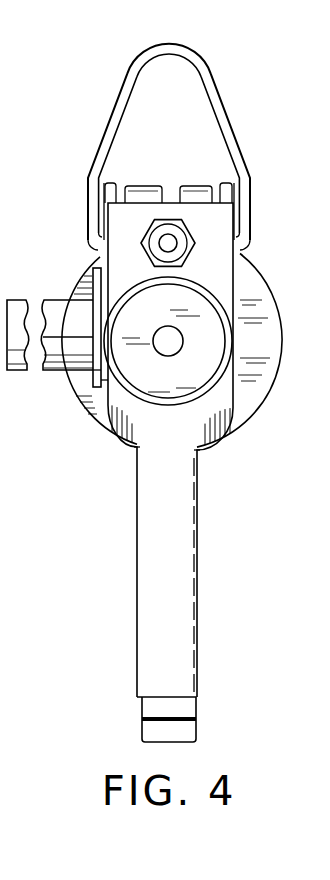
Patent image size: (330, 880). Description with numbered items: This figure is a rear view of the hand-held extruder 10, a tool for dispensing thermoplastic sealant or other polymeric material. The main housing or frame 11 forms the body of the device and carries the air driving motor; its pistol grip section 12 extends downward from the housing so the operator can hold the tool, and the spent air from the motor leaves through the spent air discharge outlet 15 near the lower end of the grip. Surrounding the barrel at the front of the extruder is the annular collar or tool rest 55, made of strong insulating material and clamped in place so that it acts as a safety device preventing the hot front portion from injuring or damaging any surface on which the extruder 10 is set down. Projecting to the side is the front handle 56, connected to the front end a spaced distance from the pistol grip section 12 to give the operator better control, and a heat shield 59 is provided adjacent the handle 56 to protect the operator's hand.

The hand-held extruder 10 is at (255, 242).
The main housing 11 is at (217, 392).
The pistol grip section 12 is at (152, 555).
The spent air discharge outlet 15 is at (150, 732).
The annular collar or tool rest 55 is at (247, 282).
The front handle 56 is at (50, 308).
The heat shield 59 is at (93, 375).